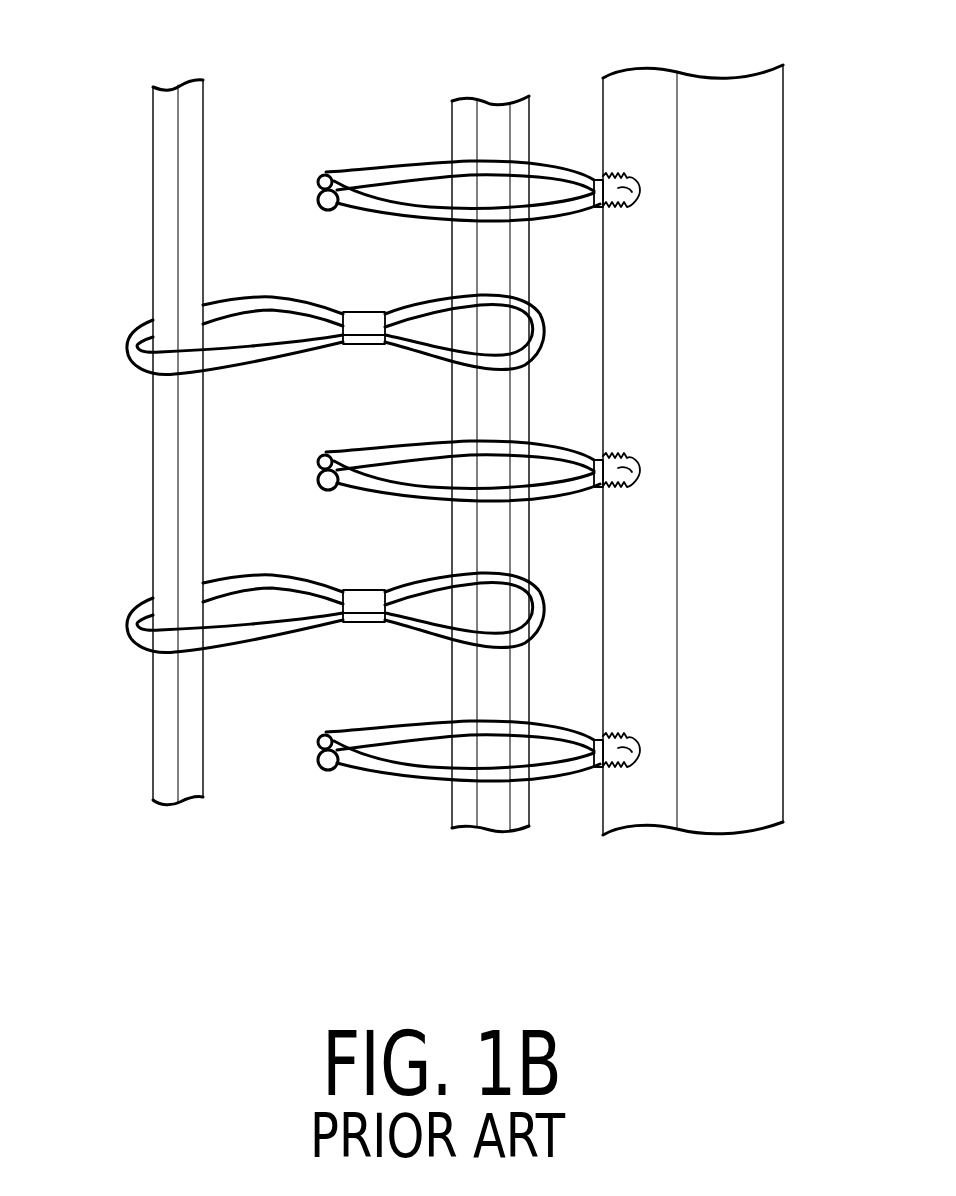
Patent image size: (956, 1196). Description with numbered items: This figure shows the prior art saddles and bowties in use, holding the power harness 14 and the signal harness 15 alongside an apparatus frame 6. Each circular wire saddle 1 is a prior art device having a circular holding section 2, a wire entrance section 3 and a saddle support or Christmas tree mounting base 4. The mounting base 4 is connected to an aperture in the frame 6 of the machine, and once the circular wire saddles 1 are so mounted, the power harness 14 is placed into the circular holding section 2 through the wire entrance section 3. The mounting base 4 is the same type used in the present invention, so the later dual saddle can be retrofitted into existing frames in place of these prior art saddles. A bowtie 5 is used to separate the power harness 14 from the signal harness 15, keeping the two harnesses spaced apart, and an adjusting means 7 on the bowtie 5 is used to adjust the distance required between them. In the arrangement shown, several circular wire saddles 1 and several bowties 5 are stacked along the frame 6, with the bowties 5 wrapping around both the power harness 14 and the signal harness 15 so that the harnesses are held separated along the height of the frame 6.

The circular wire saddle 1 is at (368, 790).
The circular holding section 2 is at (403, 164).
The wire entrance section 3 is at (321, 176).
The Christmas tree mounting base 4 is at (632, 192).
The bowtie 5 is at (225, 303).
The apparatus frame 6 is at (750, 318).
The adjusting means 7 is at (365, 326).
The power harness 14 is at (497, 118).
The signal harness 15 is at (155, 227).